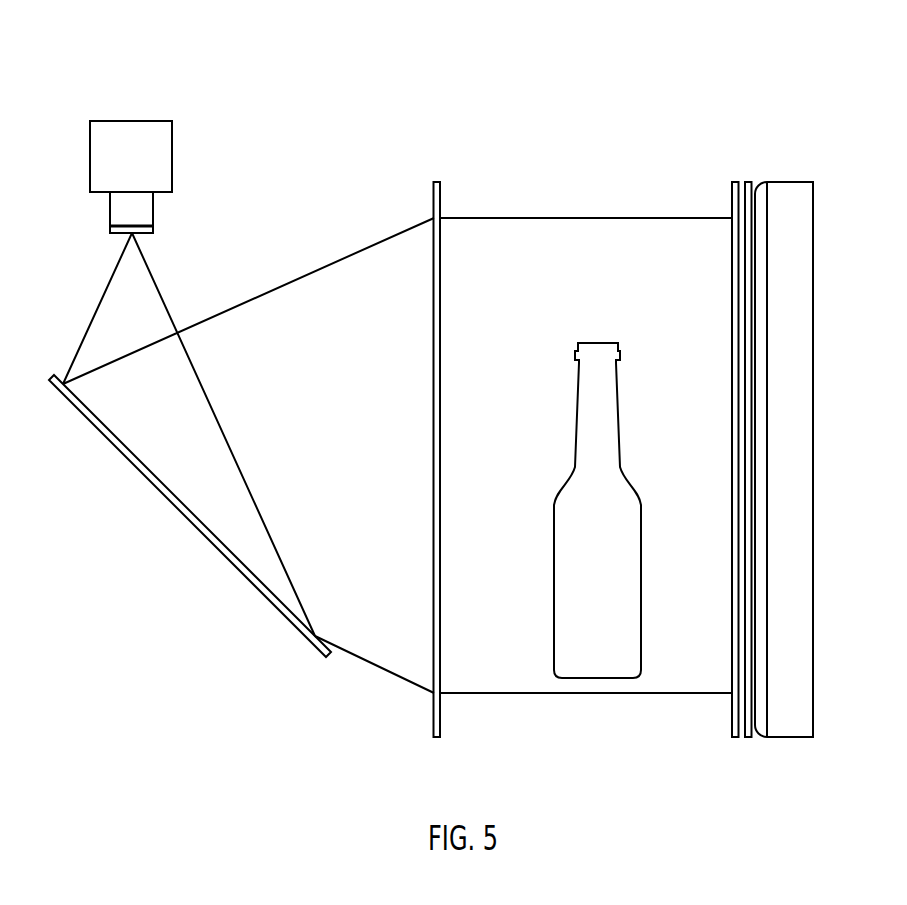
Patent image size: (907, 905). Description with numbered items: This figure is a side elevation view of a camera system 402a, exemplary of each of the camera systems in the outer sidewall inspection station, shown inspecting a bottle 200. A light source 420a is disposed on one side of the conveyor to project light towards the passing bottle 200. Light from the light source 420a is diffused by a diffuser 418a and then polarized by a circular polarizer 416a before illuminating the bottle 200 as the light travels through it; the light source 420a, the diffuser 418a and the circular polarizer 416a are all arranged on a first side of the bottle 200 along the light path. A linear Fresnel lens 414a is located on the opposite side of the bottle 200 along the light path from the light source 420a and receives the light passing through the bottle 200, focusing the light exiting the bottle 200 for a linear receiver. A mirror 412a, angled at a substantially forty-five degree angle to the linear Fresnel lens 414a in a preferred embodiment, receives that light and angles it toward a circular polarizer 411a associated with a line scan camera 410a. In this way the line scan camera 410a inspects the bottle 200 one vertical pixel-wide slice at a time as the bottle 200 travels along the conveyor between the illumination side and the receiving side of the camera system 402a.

The camera system 402a is at (303, 66).
The line scan camera 410a is at (132, 121).
The circular polarizer 411a is at (153, 230).
The mirror 412a is at (239, 572).
The linear Fresnel lens 414a is at (440, 722).
The circular polarizer 416a is at (732, 195).
The diffuser 418a is at (748, 183).
The light source 420a is at (813, 205).
The bottle 200 is at (627, 667).